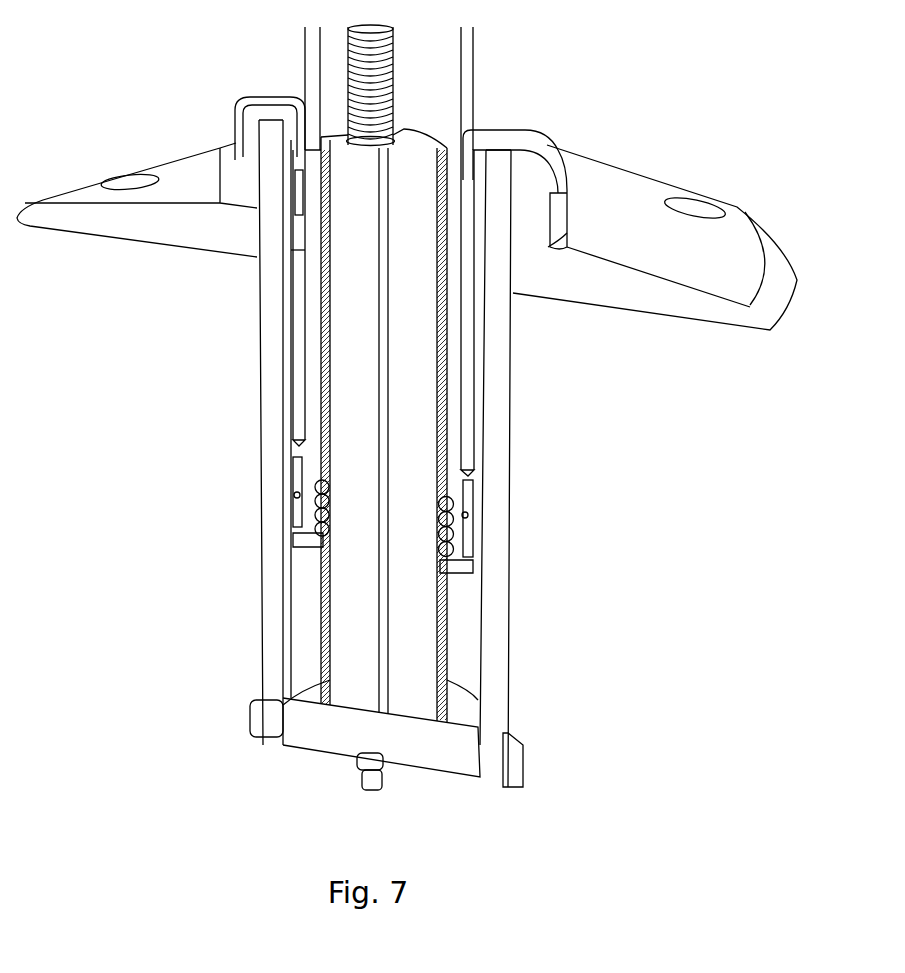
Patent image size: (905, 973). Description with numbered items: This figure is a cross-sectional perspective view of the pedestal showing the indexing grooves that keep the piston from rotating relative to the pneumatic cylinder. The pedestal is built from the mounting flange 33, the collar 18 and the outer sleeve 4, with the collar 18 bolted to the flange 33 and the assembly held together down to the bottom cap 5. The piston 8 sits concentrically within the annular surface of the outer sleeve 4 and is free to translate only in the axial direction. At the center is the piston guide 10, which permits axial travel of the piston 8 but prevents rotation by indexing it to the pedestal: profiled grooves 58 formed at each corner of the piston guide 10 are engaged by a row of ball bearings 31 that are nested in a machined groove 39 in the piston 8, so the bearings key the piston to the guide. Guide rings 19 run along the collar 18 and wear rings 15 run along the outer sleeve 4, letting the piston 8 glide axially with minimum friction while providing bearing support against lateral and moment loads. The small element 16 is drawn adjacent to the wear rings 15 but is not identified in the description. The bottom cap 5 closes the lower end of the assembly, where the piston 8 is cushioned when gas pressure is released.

The outer sleeve 4 is at (475, 632).
The bottom cap 5 is at (318, 748).
The piston 8 is at (305, 58).
The piston guide 10 is at (415, 355).
The wear rings 15 is at (295, 465).
The latch ball 16 is at (294, 496).
The collar 18 is at (548, 173).
The guide rings 19 is at (297, 218).
The ball bearings 31 is at (445, 535).
The mounting flange 33 is at (637, 193).
The machined groove 39 is at (453, 512).
The profiled grooves 58 is at (440, 413).